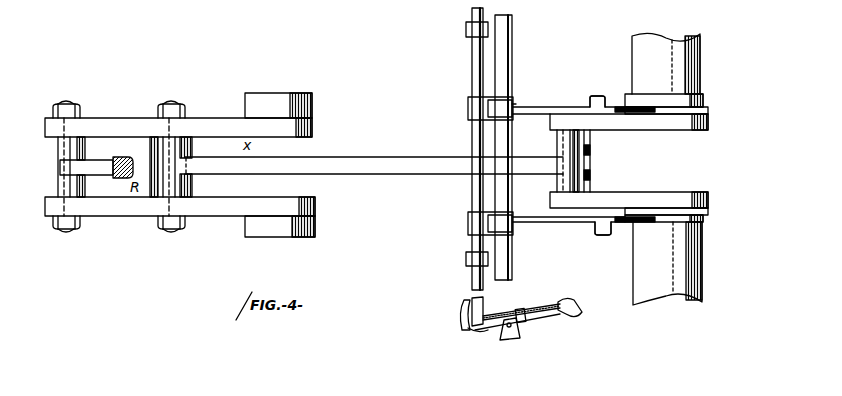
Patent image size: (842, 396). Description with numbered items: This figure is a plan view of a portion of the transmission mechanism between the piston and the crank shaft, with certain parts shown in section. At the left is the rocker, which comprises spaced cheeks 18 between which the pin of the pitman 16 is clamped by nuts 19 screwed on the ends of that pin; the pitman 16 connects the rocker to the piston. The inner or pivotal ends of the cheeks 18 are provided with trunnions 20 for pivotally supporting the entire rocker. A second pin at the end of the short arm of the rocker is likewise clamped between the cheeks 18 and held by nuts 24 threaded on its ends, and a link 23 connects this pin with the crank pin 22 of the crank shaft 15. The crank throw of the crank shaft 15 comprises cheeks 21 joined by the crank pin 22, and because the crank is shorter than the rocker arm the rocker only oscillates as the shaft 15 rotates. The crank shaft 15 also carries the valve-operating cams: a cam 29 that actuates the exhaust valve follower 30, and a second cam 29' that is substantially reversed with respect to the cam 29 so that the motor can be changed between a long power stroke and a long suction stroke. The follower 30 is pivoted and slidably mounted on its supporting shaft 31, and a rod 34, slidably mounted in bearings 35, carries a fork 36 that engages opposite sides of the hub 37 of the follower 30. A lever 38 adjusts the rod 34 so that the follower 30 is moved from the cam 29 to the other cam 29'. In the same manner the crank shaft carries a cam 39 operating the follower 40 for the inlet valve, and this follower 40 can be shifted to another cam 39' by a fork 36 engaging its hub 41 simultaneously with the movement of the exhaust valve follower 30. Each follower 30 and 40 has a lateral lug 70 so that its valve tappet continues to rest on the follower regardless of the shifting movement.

The crank shaft 15 is at (702, 66).
The pitman 16 is at (104, 168).
The cheeks 18 is at (208, 122).
The nuts 19 is at (78, 112).
The trunnions 20 is at (296, 96).
The cheeks 21 is at (678, 130).
The crank pin 22 is at (194, 147).
The link 23 is at (348, 157).
The nuts 24 is at (166, 104).
The cam 29 is at (689, 116).
The second cam 29' is at (688, 94).
The follower 30 is at (585, 106).
The shaft 31 is at (512, 62).
The rod 34 is at (472, 184).
The bearings 35 is at (466, 30).
The fork 36 is at (470, 107).
The hub 37 is at (505, 106).
The lever 38 is at (548, 320).
The cam 39 is at (689, 227).
The cam 39' is at (686, 202).
The follower 40 is at (582, 223).
The hub 41 is at (512, 226).
The lateral lug 70 is at (600, 104).